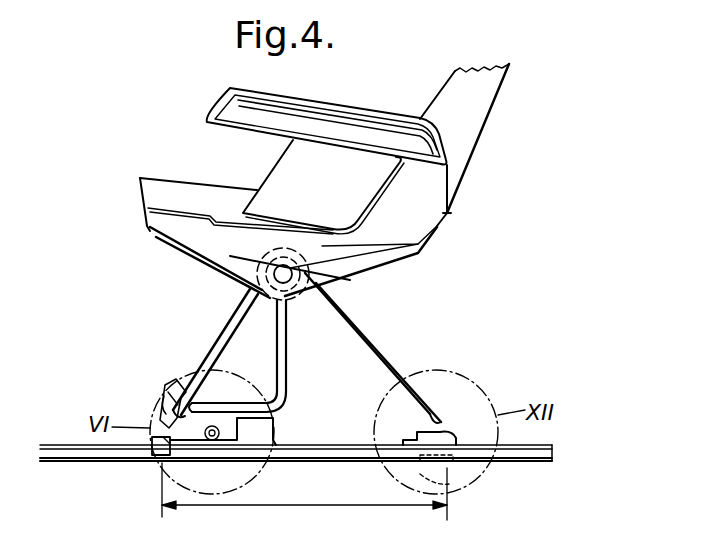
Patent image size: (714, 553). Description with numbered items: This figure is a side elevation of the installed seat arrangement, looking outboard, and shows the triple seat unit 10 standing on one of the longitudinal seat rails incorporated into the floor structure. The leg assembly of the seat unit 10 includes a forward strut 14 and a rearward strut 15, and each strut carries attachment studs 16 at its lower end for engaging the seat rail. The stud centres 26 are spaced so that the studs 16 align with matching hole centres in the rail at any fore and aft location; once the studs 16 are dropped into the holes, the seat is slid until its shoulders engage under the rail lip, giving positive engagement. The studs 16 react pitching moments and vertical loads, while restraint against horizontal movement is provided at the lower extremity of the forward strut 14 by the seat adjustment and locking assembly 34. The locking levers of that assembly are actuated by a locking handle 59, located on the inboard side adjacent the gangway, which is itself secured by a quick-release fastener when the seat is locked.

The triple seat unit 10 is at (494, 117).
The forward strut 14 is at (232, 312).
The rearward strut 15 is at (380, 348).
The attachment studs 16 is at (155, 478).
The stud centres 26 is at (304, 491).
The seat adjustment and locking assembly 34 is at (170, 386).
The locking handle 59 is at (166, 398).